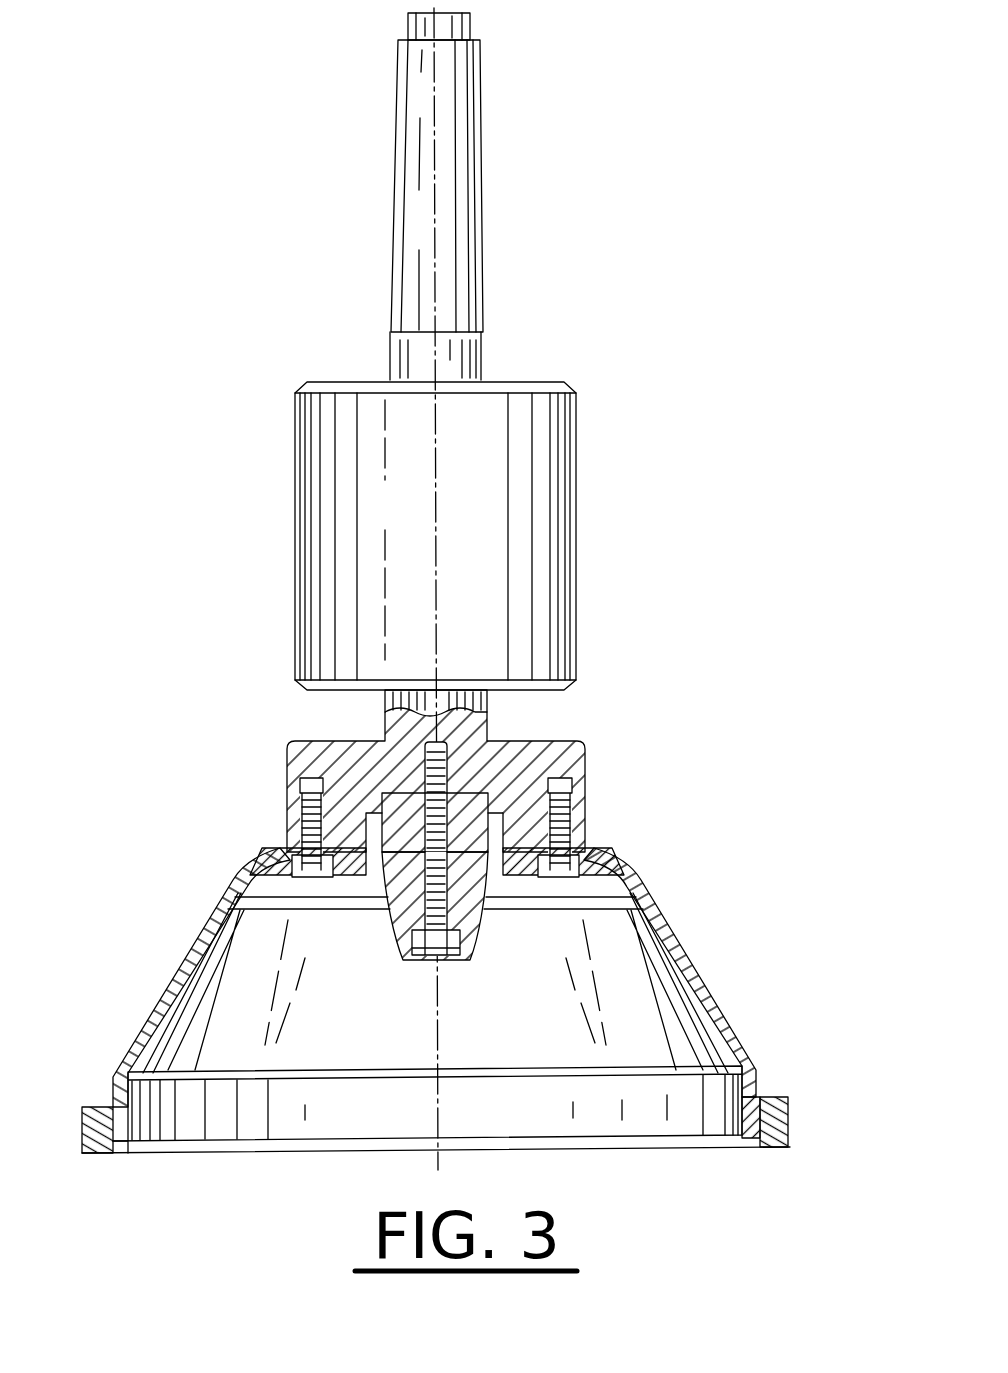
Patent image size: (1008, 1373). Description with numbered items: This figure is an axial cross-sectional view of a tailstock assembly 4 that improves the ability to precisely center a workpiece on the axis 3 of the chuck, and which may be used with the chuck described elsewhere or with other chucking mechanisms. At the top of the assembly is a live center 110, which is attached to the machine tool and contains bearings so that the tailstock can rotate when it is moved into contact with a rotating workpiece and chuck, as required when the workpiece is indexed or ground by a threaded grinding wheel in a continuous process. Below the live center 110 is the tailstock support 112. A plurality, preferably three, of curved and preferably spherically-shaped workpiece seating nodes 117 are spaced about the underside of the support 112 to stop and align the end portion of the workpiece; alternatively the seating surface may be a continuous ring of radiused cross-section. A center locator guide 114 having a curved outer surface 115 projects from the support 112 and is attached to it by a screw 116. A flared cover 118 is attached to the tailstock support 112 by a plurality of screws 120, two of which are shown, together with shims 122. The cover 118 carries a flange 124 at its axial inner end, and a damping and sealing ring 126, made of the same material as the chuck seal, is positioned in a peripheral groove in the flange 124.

The live center 110 is at (570, 540).
The tailstock support 112 is at (337, 752).
The tailstock assembly 4 is at (626, 716).
The center locator guide 114 is at (490, 913).
The curved outer surface 115 is at (372, 900).
The screw 116 is at (418, 957).
The workpiece seating nodes 117 is at (463, 855).
The flared cover 118 is at (645, 890).
The screws 120 is at (605, 857).
The shims 122 is at (290, 838).
The flange 124 is at (110, 1112).
The damping and sealing ring 126 is at (787, 1122).
The axis 3 is at (440, 1113).